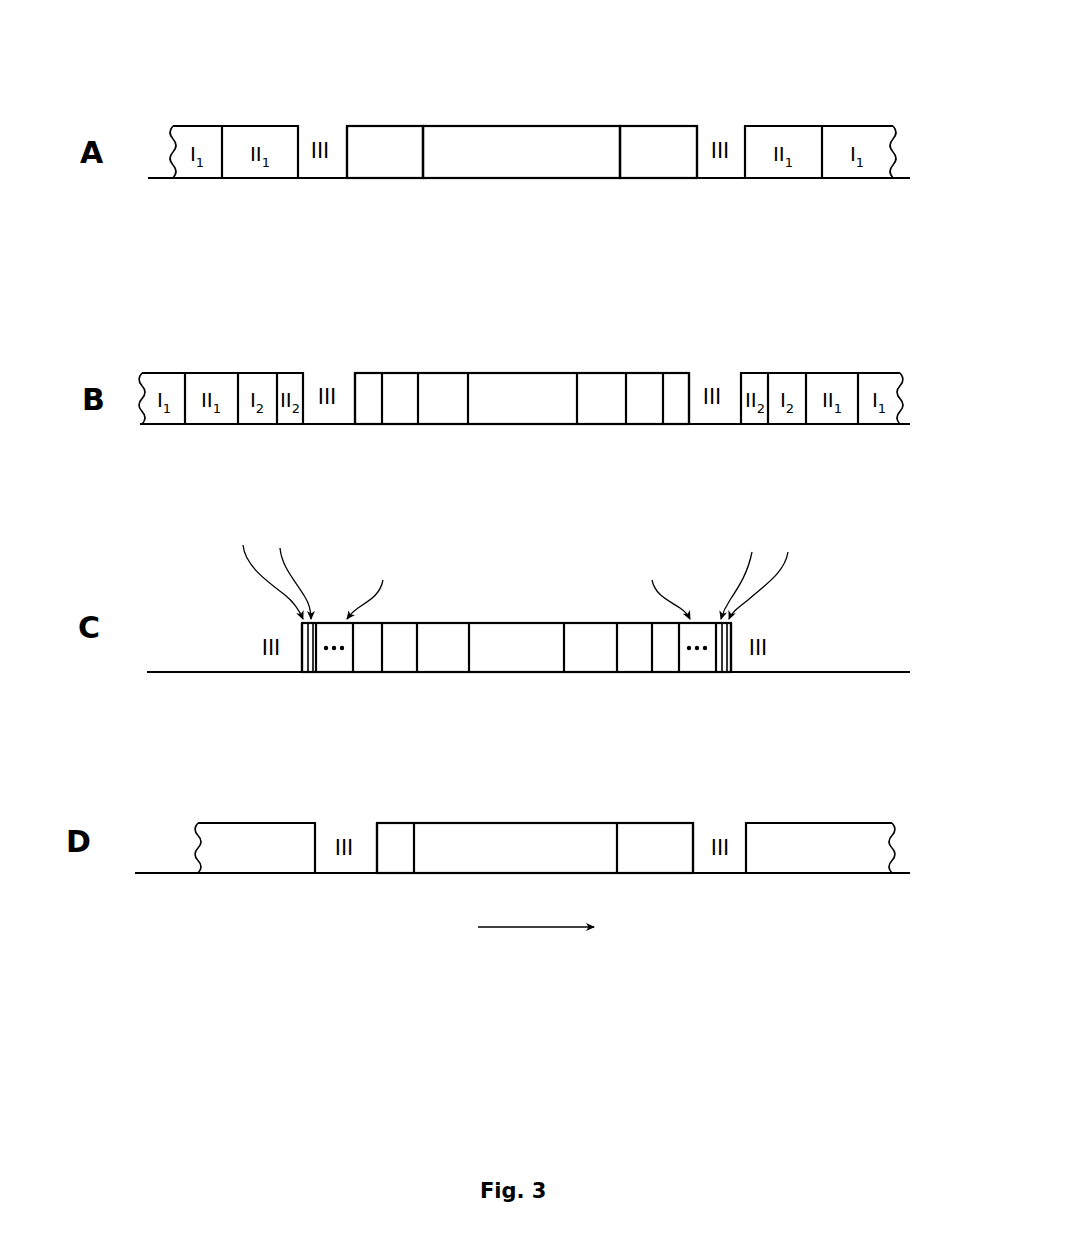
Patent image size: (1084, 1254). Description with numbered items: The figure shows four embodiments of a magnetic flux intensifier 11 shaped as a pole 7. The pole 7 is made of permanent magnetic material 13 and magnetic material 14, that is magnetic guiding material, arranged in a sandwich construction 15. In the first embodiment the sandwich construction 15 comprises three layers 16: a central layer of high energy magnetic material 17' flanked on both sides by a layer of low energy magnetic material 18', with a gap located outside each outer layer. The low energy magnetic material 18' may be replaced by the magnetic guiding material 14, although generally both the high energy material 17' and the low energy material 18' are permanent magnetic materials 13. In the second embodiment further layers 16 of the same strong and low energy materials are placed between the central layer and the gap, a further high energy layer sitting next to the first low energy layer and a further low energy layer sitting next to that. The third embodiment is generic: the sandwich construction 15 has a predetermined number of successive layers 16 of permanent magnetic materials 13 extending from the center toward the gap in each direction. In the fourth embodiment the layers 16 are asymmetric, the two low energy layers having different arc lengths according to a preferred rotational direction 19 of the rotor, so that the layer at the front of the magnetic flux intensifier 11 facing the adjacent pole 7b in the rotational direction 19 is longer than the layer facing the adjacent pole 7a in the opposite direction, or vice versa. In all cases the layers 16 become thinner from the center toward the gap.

In FIG. 3A, the pole 7 is at (350, 129).
In FIG. 3D, the adjacent pole 7a is at (257, 855).
In FIG. 3D, the adjacent pole 7b is at (811, 848).
In FIG. 3A, the magnetic flux intensifier 11 is at (601, 150).
In FIG. 3B, the magnetic flux intensifier 11 is at (596, 375).
In FIG. 3C, the magnetic flux intensifier 11 is at (551, 580).
In FIG. 3D, the magnetic flux intensifier 11 is at (607, 790).
In FIG. 3A, the permanent magnetic material 13 is at (420, 118).
In FIG. 3B, the permanent magnetic material 13 is at (415, 345).
In FIG. 3C, the permanent magnetic material 13 is at (455, 612).
In FIG. 3D, the permanent magnetic material 13 is at (452, 812).
In FIG. 3A, the magnetic material 14 is at (359, 118).
In FIG. 3A, the sandwich construction 15 is at (758, 111).
In FIG. 3B, the sandwich construction 15 is at (752, 361).
In FIG. 3C, the sandwich construction 15 is at (792, 618).
In FIG. 3D, the sandwich construction 15 is at (753, 813).
In FIG. 3A, the layers 16 is at (360, 176).
In FIG. 3B, the layers 16 is at (370, 420).
In FIG. 3A, the high energy magnetic material 17' is at (521, 167).
In FIG. 3A, the low energy magnetic material 18' is at (542, 168).
In FIG. 3D, the rotational direction 19 is at (540, 930).